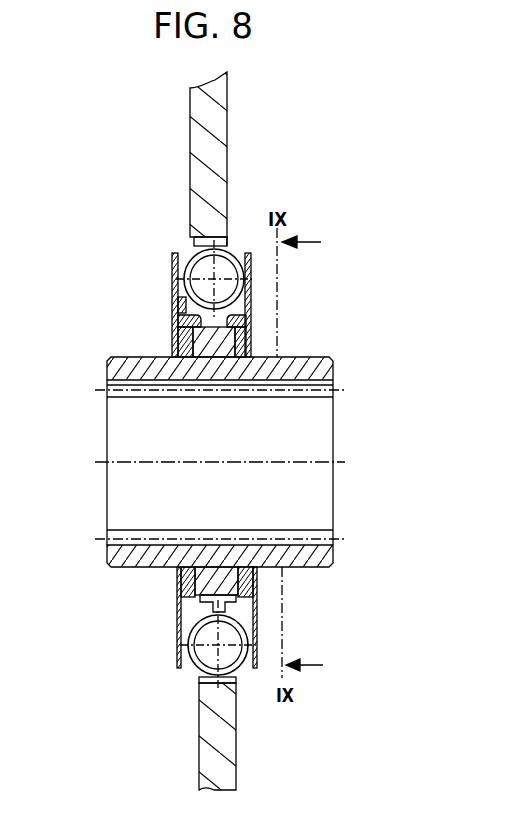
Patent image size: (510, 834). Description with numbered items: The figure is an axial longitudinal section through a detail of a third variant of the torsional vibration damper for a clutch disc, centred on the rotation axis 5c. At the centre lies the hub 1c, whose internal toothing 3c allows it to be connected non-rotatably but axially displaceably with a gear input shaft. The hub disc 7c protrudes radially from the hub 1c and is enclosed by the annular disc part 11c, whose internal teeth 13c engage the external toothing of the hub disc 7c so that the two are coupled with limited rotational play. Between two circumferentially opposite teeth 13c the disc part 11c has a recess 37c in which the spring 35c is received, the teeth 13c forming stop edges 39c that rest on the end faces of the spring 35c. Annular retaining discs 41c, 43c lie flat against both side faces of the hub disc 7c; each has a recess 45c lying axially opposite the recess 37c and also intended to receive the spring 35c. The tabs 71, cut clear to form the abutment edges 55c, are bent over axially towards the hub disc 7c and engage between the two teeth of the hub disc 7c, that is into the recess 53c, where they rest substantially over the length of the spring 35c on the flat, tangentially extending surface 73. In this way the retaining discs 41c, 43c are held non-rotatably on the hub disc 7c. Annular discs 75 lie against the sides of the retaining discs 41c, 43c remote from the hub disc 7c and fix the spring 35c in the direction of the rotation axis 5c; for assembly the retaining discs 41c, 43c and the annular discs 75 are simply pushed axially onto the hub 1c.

The hub 1c is at (105, 372).
The internal toothing 3c is at (328, 397).
The rotation axis 5c is at (343, 458).
The hub disc 7c is at (248, 340).
The disc part 11c is at (221, 116).
The teeth 13c is at (189, 243).
The spring 35c is at (185, 657).
The recess 37c is at (229, 247).
The stop edges 39c is at (200, 268).
The retaining disc 41c is at (240, 302).
The retaining disc 43c is at (173, 267).
The recess 45c is at (245, 617).
The recess 53c is at (212, 598).
The abutment edges 55c is at (192, 615).
The tabs 71 is at (176, 318).
The surface 73 is at (173, 297).
The annular discs 75 is at (180, 592).